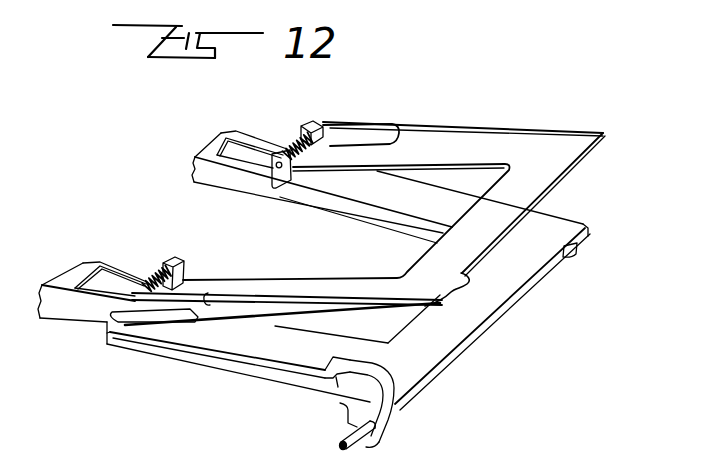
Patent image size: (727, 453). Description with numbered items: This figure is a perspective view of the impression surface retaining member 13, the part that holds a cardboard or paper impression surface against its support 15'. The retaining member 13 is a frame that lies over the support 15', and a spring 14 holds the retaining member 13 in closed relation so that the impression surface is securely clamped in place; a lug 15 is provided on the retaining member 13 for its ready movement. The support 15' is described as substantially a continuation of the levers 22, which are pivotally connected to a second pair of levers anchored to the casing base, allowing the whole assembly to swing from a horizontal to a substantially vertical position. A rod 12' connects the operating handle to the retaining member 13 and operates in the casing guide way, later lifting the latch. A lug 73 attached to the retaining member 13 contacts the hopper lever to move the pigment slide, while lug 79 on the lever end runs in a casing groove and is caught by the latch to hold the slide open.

The rod 12' is at (386, 437).
The retaining member 13 is at (585, 141).
The spring 14 is at (300, 138).
The lug 15 is at (432, 290).
The support 15' is at (306, 362).
The levers 22 is at (243, 173).
The lug 73 is at (349, 353).
The lug 79 is at (402, 417).